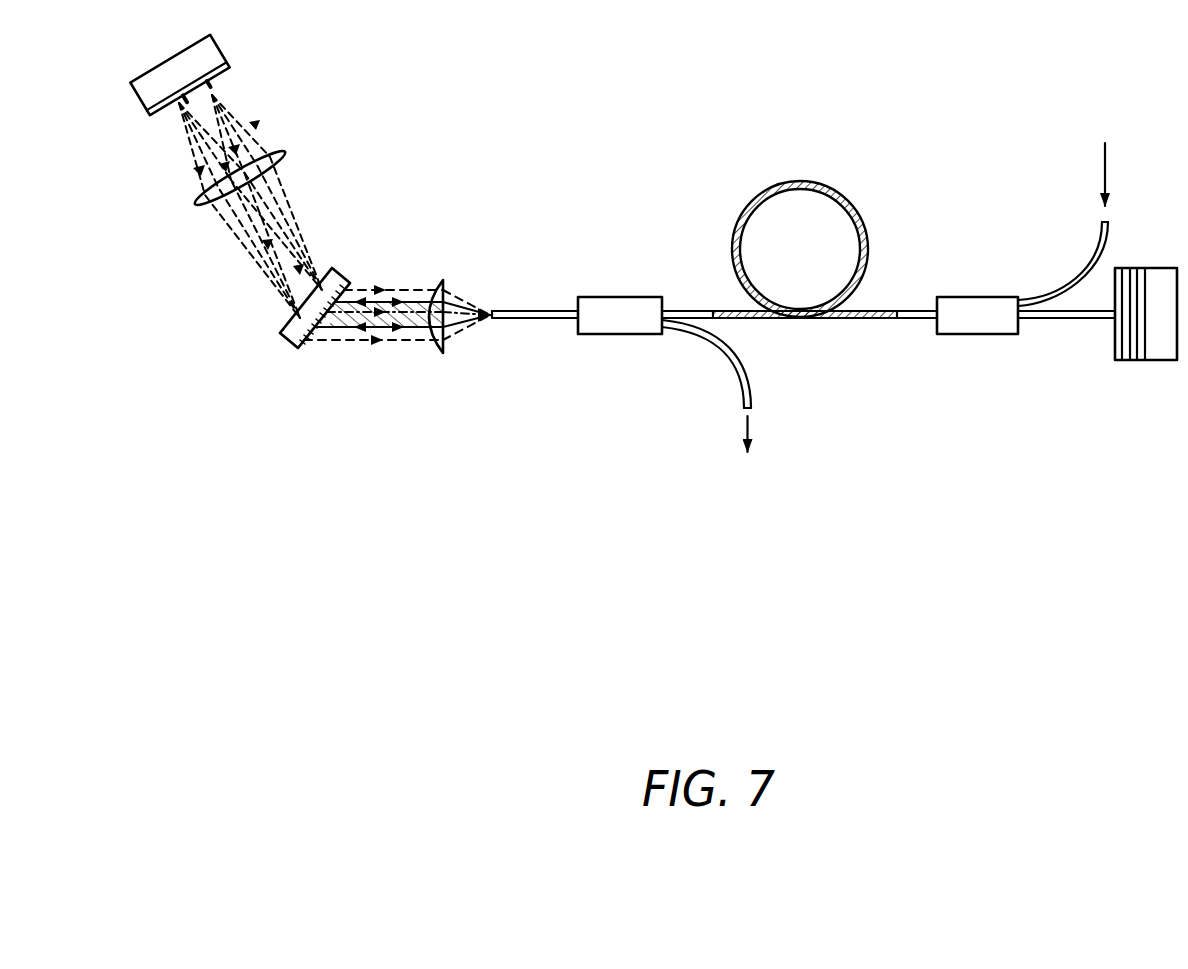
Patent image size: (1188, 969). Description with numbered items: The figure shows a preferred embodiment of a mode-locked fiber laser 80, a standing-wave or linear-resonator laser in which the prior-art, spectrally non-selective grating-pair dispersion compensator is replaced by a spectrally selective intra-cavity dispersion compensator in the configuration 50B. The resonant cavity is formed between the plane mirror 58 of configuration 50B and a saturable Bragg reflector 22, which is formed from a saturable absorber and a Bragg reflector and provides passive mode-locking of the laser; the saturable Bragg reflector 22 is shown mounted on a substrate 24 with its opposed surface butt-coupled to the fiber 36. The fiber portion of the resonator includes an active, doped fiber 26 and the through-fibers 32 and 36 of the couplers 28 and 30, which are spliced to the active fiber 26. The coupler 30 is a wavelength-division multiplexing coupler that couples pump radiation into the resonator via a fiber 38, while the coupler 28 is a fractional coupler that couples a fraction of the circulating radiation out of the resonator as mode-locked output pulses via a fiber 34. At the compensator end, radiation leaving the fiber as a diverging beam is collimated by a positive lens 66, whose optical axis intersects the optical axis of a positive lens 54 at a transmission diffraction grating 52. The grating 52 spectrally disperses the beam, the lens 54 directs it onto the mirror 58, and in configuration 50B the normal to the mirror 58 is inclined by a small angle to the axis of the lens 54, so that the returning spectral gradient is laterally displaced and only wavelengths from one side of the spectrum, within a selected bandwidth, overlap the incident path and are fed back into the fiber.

The saturable Bragg reflector 22 is at (1124, 367).
The pump source fiber array / emitters 24 is at (1156, 360).
The active fiber 26 is at (845, 188).
The coupler 28 is at (619, 292).
The coupler 30 is at (977, 337).
The through-fiber 32 is at (538, 320).
The fiber 34 is at (703, 350).
The through-fiber 36 is at (914, 309).
The fiber 38 is at (1067, 275).
The configuration of intra-cavity dispersion compensating device 50B is at (199, 314).
The transmission diffraction grating 52 is at (357, 271).
The positive lens 54 is at (300, 150).
The plane mirror 58 is at (222, 77).
The positive lens 66 is at (436, 349).
The mode-locked fiber laser 80 is at (523, 558).